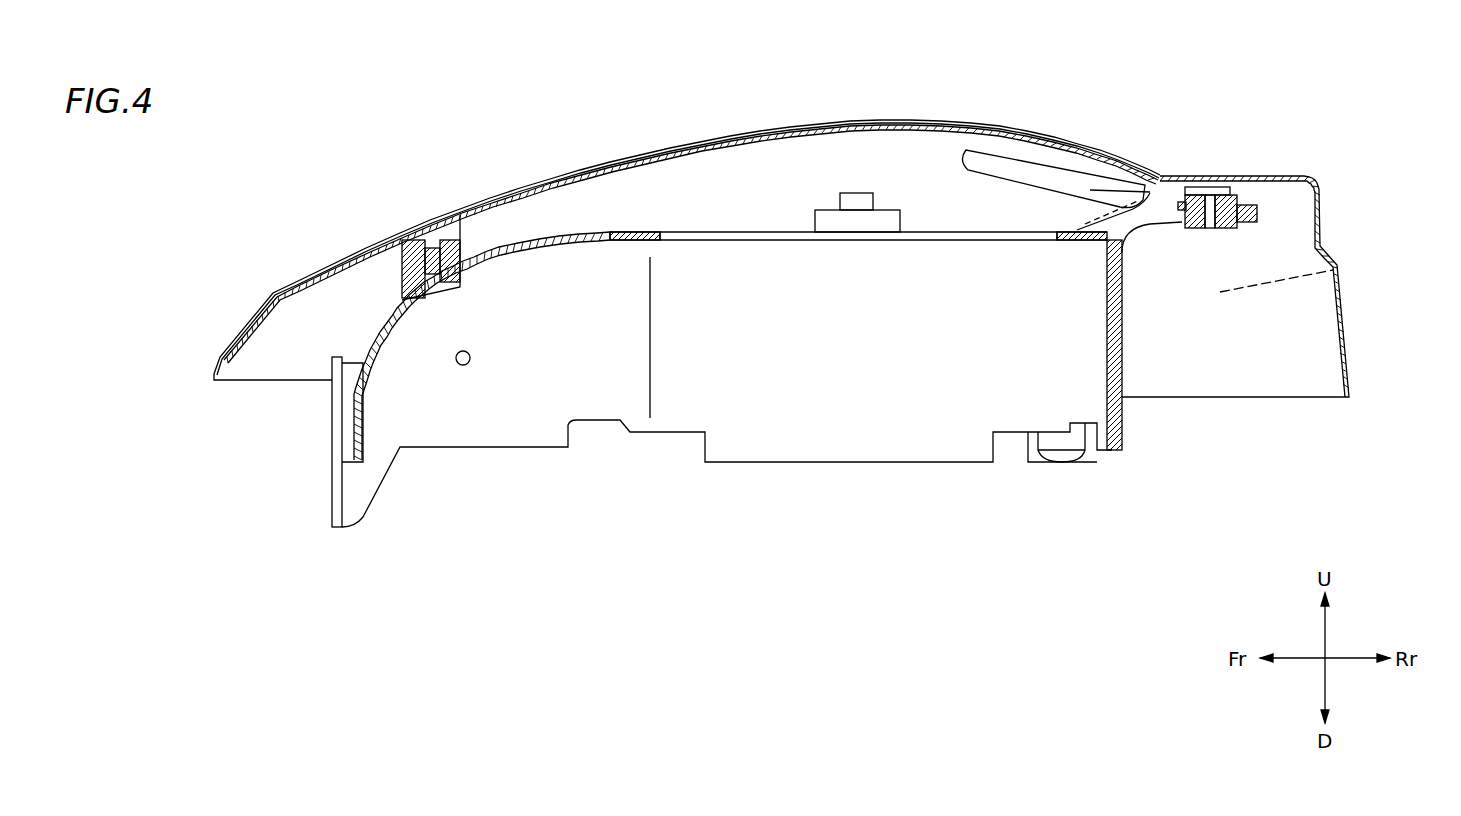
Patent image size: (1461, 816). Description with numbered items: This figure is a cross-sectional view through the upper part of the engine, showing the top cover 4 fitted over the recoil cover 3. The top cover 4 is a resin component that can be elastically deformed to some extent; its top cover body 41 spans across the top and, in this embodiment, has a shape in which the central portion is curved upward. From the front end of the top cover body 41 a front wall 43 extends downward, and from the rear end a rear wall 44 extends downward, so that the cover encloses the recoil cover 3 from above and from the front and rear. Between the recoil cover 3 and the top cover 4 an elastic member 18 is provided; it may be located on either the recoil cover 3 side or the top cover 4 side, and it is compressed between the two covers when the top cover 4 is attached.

The recoil cover 3 is at (588, 233).
The top cover 4 is at (978, 125).
The elastic member 18 is at (413, 224).
The top cover body 41 is at (780, 123).
The front wall 43 is at (213, 378).
The rear wall 44 is at (1350, 337).